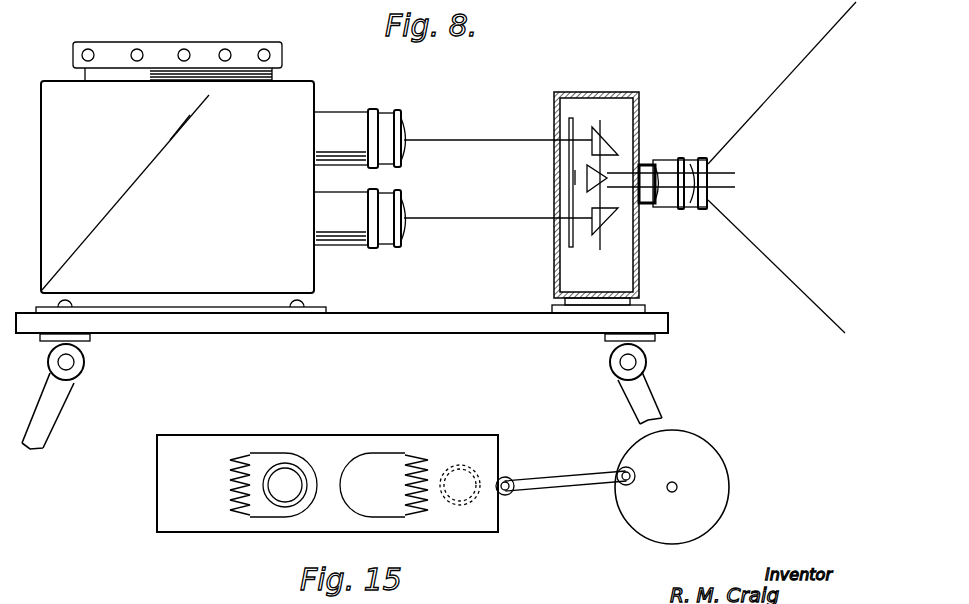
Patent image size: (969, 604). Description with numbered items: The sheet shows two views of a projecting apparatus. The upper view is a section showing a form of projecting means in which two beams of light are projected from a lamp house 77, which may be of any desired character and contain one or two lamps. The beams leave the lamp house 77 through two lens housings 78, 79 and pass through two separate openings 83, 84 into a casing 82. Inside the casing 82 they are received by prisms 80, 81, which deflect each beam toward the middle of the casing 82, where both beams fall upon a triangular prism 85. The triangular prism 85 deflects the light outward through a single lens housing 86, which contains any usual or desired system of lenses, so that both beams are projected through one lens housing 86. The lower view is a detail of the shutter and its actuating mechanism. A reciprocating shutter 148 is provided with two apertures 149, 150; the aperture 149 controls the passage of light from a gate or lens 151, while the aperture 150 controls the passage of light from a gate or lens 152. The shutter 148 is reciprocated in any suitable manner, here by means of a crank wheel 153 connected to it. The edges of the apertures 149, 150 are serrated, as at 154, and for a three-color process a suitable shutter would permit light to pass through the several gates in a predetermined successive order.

In FIG. 8, the lamp house 77 is at (177, 187).
In FIG. 8, the lens housing 78 is at (338, 118).
In FIG. 8, the lens housing 79 is at (340, 247).
In FIG. 8, the prism 80 is at (593, 129).
In FIG. 8, the prism 81 is at (593, 237).
In FIG. 8, the casing 82 is at (600, 89).
In FIG. 8, the opening 83 is at (556, 135).
In FIG. 8, the opening 84 is at (556, 222).
In FIG. 8, the triangular prism 85 is at (580, 180).
In FIG. 8, the lens housing 86 is at (670, 156).
In FIG. 15, the reciprocating shutter 148 is at (444, 456).
In FIG. 15, the aperture 149 is at (293, 462).
In FIG. 15, the aperture 150 is at (383, 453).
In FIG. 15, the gate or lens 151 is at (290, 500).
In FIG. 15, the gate or lens 152 is at (478, 466).
In FIG. 15, the crank wheel 153 is at (672, 487).
In FIG. 15, the serrations 154 is at (420, 503).